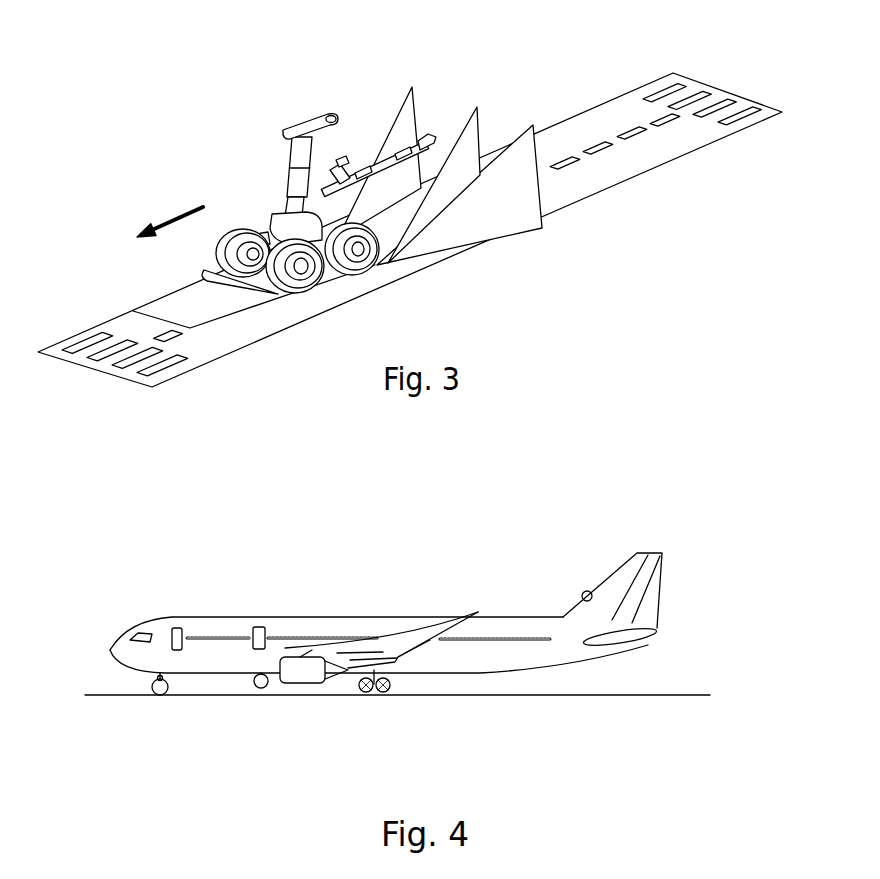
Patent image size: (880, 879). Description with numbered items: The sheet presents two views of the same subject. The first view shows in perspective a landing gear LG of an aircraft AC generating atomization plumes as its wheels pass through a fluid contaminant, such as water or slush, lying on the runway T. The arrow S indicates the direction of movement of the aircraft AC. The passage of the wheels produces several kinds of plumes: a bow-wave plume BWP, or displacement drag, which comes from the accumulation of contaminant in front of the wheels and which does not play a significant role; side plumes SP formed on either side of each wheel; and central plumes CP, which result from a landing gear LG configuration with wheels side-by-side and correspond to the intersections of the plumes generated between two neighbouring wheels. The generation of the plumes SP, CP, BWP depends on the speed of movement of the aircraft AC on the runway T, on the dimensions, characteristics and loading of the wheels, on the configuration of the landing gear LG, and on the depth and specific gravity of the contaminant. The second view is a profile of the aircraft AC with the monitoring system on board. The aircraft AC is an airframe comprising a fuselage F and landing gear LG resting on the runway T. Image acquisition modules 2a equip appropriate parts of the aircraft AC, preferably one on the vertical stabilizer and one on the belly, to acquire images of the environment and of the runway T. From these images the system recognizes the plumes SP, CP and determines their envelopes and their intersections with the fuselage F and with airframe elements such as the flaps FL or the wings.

In FIG. 3, the runway T is at (638, 178).
In FIG. 4, the runway T is at (523, 696).
In FIG. 3, the side plume SP is at (393, 115).
In FIG. 3, the central plume CP is at (473, 80).
In FIG. 3, the bow-wave plume BWP is at (276, 297).
In FIG. 3, the landing gear LG is at (238, 176).
In FIG. 4, the landing gear LG is at (160, 695).
In FIG. 3, the arrow indicating direction of movement S is at (181, 201).
In FIG. 4, the aircraft AC is at (386, 619).
In FIG. 4, the fuselage F is at (300, 616).
In FIG. 4, the image acquisition module 2a is at (588, 590).
In FIG. 4, the flaps FL is at (427, 640).